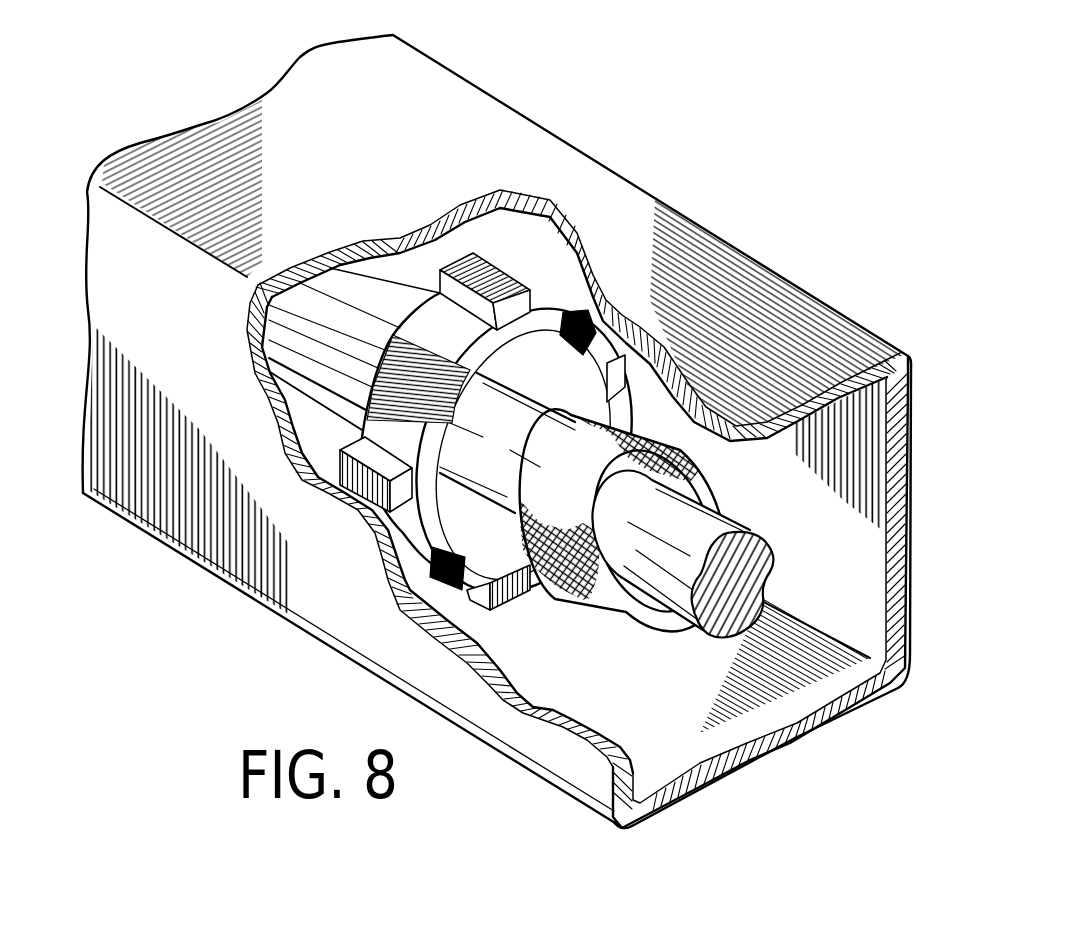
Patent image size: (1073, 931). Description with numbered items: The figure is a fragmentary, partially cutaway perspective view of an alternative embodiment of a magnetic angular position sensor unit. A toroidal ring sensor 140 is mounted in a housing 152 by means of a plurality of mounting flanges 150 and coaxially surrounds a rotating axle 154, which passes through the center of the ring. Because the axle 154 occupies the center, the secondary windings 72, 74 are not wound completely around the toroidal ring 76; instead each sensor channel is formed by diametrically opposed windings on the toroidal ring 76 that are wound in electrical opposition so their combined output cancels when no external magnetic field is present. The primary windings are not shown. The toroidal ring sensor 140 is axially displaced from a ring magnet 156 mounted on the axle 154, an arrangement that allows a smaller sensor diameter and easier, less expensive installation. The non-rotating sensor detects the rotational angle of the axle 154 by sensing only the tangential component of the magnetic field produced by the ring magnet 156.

The toroidal ring sensor 140 is at (342, 427).
The housing 152 is at (777, 303).
The rotating axle 154 is at (668, 590).
The ring magnet 156 is at (700, 483).
The secondary winding 74 is at (388, 372).
The secondary winding 72 is at (590, 320).
The mounting flange 150 is at (483, 267).
The toroidal ring 76 is at (395, 450).